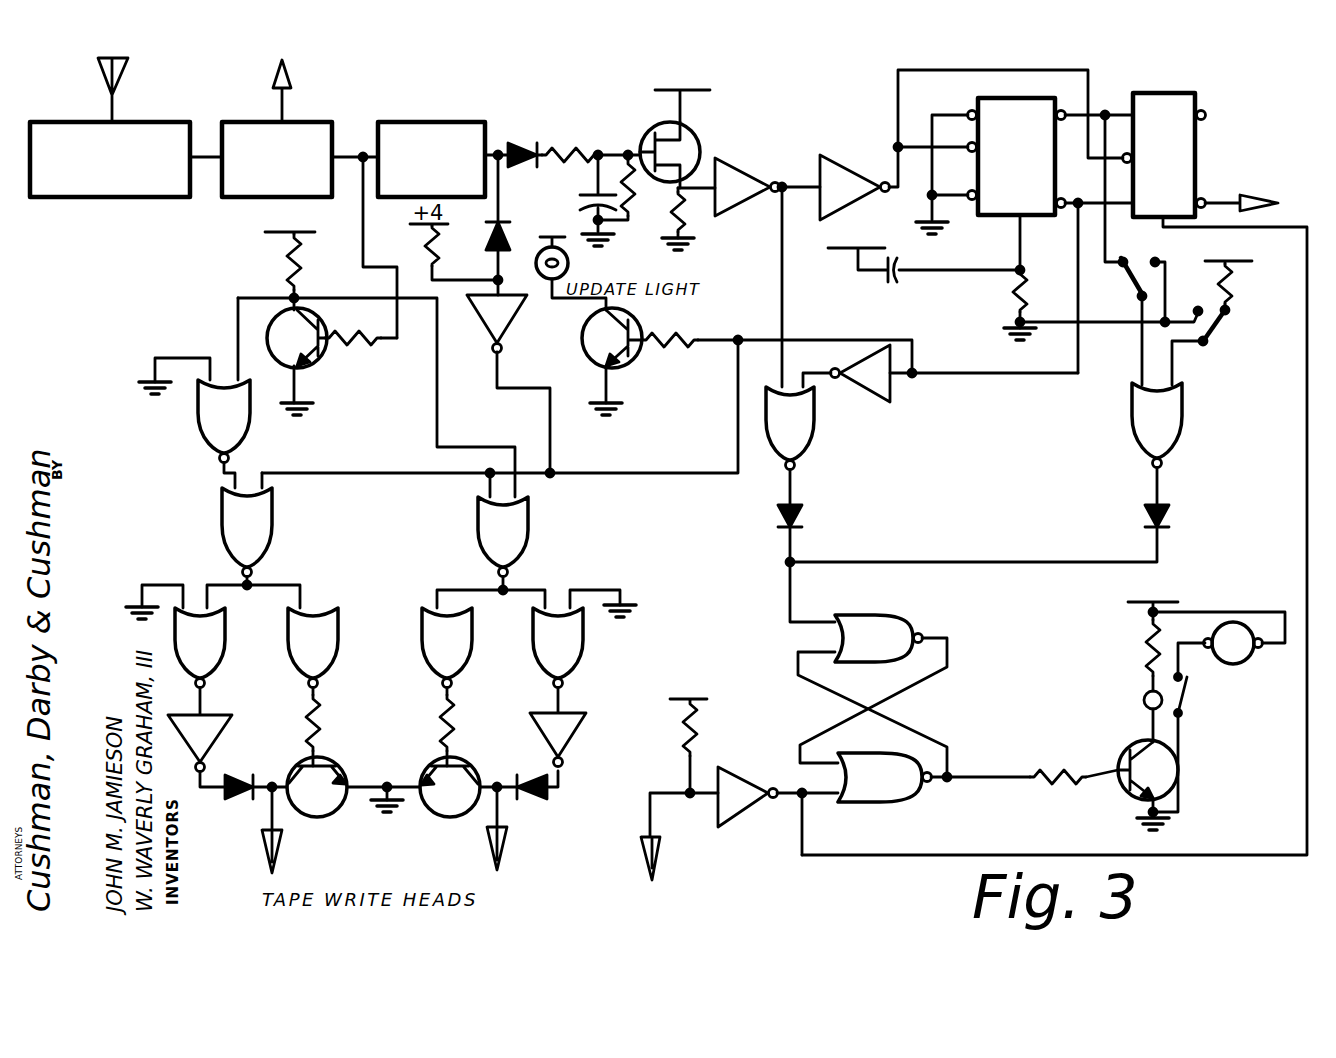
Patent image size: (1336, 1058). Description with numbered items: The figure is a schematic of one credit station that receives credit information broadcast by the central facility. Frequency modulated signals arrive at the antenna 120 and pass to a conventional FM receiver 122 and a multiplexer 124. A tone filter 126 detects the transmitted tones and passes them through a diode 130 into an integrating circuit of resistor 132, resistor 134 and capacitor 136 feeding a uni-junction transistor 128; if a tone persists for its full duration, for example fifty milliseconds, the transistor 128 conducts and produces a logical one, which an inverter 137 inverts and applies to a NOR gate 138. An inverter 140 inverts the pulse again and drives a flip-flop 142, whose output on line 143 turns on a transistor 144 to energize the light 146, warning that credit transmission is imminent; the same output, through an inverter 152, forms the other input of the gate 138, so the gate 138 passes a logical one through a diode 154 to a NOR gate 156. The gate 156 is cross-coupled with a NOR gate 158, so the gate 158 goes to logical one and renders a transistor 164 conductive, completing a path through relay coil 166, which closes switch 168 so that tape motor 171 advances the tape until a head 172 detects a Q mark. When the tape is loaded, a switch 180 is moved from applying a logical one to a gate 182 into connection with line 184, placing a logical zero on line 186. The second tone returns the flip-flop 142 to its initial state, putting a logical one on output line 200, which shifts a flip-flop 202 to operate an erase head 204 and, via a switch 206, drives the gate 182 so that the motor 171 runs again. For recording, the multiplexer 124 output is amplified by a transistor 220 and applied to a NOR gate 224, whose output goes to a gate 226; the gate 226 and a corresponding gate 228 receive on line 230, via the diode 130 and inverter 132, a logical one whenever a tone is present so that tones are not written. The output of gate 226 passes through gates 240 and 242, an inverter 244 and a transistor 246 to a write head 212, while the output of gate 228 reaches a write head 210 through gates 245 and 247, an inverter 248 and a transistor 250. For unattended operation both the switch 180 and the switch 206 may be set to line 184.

The antenna 120 is at (126, 70).
The FM receiver 122 is at (110, 197).
The multiplexer 124 is at (318, 126).
The tone filter 126 is at (447, 120).
The uni-junction transistor 128 is at (687, 138).
The diode 130 is at (522, 137).
The resistor 132 is at (562, 166).
The resistor 134 is at (646, 202).
The capacitor 136 is at (600, 210).
The inverter 137 is at (760, 170).
The NOR gate 138 is at (812, 427).
The inverter 140 is at (837, 157).
The flip-flop 142 is at (1043, 80).
The line 143 is at (986, 374).
The transistor 144 is at (583, 340).
The light 146 is at (536, 263).
The inverter 152 is at (862, 352).
The diode 154 is at (806, 513).
The NOR gate 156 is at (885, 615).
The NOR gate 158 is at (892, 800).
The transistor 164 is at (1140, 748).
The relay coil 166 is at (1148, 652).
The switch 168 is at (1190, 696).
The tape motor 171 is at (1262, 658).
The head 172 is at (661, 849).
The switch 180 is at (1219, 326).
The NOR gate 182 is at (1185, 405).
The line 184 is at (1106, 326).
The line 186 is at (1175, 372).
The output line 200 is at (1076, 112).
The flip-flop 202 is at (1180, 107).
The erase head 204 is at (1258, 212).
The switch 206 is at (1112, 286).
The write head 210 is at (508, 843).
The write head 212 is at (280, 849).
The transistor 220 is at (327, 362).
The NOR gate 224 is at (256, 432).
The gate 226 is at (276, 533).
The gate 228 is at (531, 524).
The line 230 is at (392, 476).
The gate 240 is at (228, 640).
The gate 242 is at (338, 644).
The inverter 244 is at (214, 738).
The gate 245 is at (470, 654).
The transistor 246 is at (338, 768).
The gate 247 is at (578, 645).
The inverter 248 is at (572, 743).
The transistor 250 is at (464, 766).